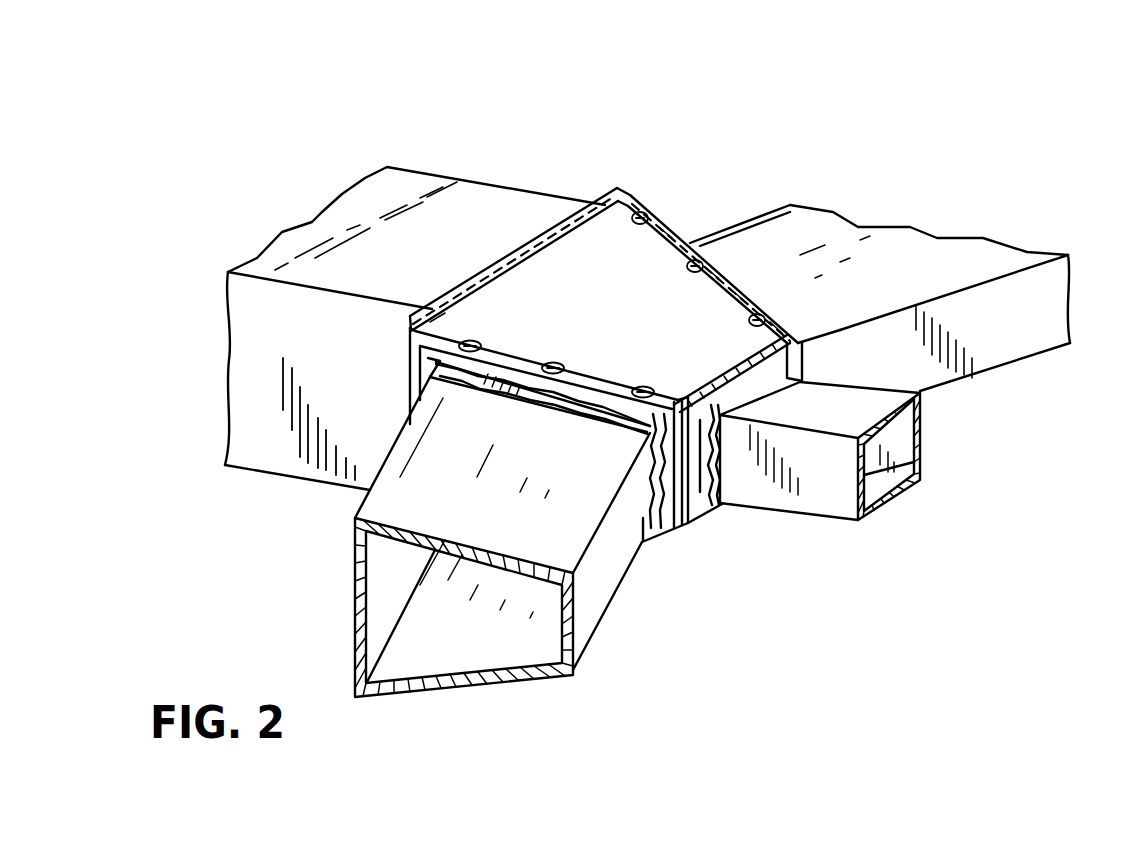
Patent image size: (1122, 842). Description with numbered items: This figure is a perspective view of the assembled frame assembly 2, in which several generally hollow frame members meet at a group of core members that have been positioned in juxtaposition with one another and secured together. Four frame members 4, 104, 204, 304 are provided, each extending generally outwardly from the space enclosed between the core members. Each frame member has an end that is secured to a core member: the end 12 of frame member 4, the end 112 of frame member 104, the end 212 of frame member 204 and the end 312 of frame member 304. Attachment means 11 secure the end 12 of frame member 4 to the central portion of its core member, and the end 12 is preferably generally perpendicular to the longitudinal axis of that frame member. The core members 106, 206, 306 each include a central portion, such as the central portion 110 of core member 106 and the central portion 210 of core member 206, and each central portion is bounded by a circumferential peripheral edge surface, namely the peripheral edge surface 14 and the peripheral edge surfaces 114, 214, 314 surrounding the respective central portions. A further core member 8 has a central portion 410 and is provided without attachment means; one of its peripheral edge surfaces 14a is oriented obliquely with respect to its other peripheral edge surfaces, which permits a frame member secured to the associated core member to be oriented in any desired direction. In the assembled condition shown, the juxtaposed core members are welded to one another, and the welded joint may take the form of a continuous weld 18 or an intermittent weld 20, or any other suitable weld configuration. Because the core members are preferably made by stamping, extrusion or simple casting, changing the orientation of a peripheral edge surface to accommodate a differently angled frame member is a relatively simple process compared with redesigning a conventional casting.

The frame assembly 2 is at (621, 158).
The frame member 4 is at (938, 257).
The core member 8 is at (487, 316).
The attachment means 11 is at (542, 246).
The end of frame member 12 is at (714, 248).
The peripheral edge surface 14 is at (728, 278).
The oblique peripheral edge surface 14a is at (745, 297).
The continuous weld 18 is at (570, 247).
The intermittent weld 20 is at (640, 205).
The frame member 104 is at (874, 404).
The core member 106 is at (818, 336).
The central portion 110 is at (723, 505).
The end of frame member 112 is at (808, 378).
The peripheral edge surface 114 is at (740, 372).
The frame member 204 is at (588, 620).
The core member 206 is at (698, 492).
The central portion 210 is at (586, 393).
The end of frame member 212 is at (643, 542).
The peripheral edge surface 214 is at (600, 375).
The frame member 304 is at (283, 463).
The core member 306 is at (603, 190).
The end of frame member 312 is at (377, 347).
The peripheral edge surface 314 is at (428, 310).
The central portion 410 is at (525, 253).